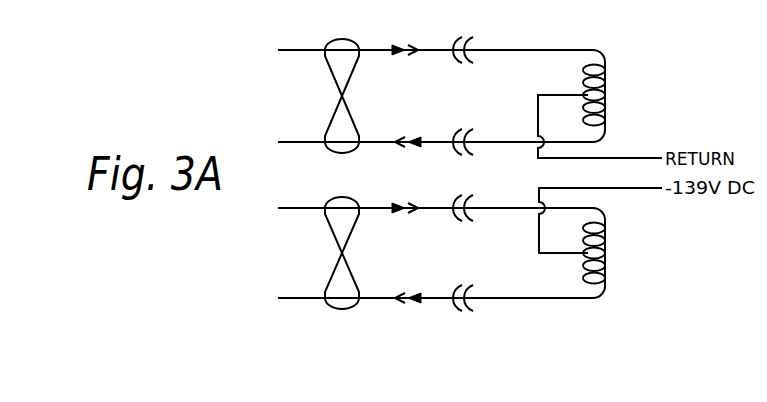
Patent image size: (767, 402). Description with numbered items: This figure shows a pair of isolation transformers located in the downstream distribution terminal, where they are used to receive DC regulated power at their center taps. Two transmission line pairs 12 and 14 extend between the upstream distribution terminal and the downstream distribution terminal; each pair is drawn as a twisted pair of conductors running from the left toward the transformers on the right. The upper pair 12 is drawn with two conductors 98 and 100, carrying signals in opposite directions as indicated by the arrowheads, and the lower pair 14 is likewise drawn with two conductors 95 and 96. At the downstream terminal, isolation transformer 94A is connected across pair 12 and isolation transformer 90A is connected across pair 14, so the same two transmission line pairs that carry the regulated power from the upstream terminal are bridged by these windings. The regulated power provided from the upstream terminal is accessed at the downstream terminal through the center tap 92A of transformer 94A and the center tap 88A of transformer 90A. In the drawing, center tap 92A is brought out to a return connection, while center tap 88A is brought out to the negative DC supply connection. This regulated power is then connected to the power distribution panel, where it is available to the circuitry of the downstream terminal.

The transmission line pair 12 is at (333, 113).
The transmission line pair 14 is at (333, 272).
The tip conductor of first pair 98 is at (377, 50).
The ring conductor of first pair 100 is at (376, 142).
The tip conductor of second pair 95 is at (378, 208).
The ring conductor of second pair 96 is at (377, 298).
The isolation transformer 94A is at (607, 88).
The center tap 92A is at (588, 96).
The isolation transformer 90A is at (607, 258).
The center tap 88A is at (586, 254).